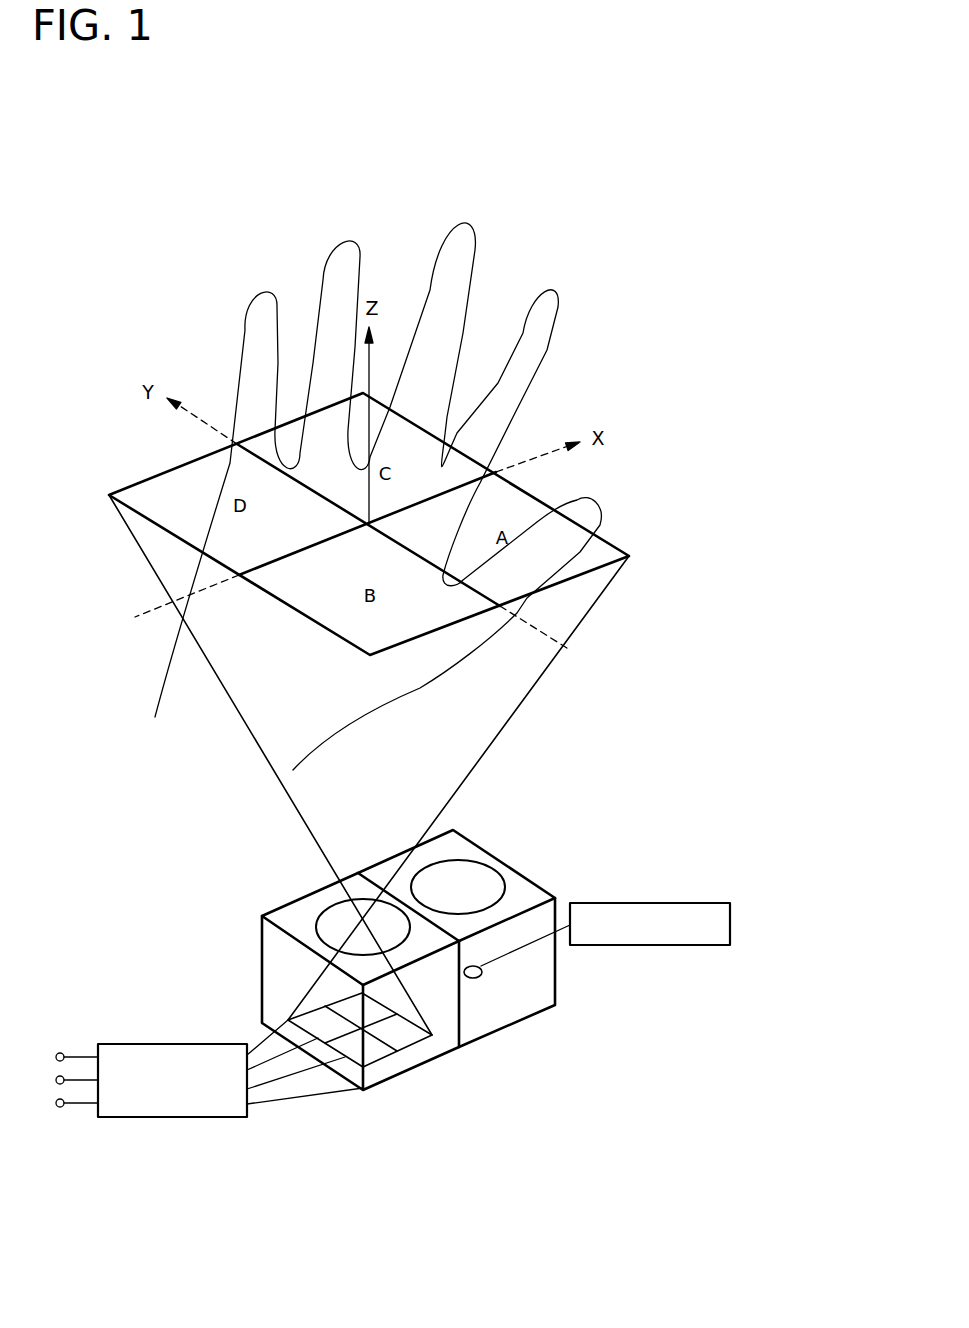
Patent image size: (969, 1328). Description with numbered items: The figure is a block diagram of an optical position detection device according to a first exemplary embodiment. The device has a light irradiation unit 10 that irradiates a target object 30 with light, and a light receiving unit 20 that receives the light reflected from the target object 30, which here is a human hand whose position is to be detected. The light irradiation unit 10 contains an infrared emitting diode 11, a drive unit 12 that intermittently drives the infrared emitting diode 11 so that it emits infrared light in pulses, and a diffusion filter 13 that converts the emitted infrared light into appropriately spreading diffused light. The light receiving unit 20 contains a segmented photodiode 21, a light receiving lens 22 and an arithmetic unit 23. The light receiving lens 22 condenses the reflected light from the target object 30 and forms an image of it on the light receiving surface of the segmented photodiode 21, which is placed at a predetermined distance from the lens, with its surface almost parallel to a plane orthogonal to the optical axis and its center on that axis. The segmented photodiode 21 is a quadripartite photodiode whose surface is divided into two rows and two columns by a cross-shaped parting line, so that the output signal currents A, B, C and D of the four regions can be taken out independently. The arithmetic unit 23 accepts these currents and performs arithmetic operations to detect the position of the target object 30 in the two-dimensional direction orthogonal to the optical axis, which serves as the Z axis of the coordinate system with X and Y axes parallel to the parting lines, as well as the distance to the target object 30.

The light irradiation unit 10 is at (554, 765).
The infrared emitting diode 11 is at (483, 972).
The drive unit 12 is at (640, 902).
The diffusion filter 13 is at (485, 888).
The light receiving unit 20 is at (104, 925).
The segmented photodiode 21 is at (382, 1060).
The light receiving lens 22 is at (330, 923).
The arithmetic unit 23 is at (200, 1043).
The target object 30 is at (460, 252).